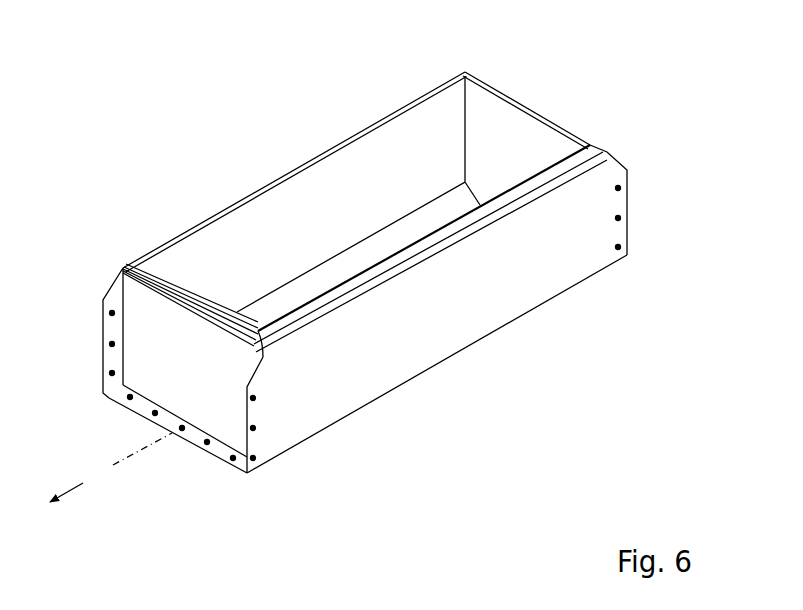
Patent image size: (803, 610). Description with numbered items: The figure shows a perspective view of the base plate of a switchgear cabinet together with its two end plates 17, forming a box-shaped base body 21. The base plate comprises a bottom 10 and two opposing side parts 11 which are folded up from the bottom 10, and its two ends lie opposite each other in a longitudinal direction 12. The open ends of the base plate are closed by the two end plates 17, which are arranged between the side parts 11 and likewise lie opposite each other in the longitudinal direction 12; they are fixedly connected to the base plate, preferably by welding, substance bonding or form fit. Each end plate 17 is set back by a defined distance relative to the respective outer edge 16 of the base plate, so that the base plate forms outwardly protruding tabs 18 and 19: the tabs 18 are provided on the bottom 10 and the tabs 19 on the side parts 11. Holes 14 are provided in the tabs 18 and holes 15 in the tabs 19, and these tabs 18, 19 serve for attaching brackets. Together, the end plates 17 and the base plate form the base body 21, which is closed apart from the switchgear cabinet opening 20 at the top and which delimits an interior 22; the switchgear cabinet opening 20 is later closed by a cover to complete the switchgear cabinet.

The bottom 10 is at (448, 205).
The side parts 11 is at (318, 152).
The longitudinal direction 12 is at (73, 492).
The holes 14 is at (225, 462).
The holes 15 is at (632, 187).
The outer edges 16 is at (133, 410).
The end plates 17 is at (530, 110).
The tabs 18 is at (198, 432).
The tabs 19 is at (622, 197).
The switchgear cabinet opening 20 is at (550, 142).
The base body 21 is at (238, 128).
The interior 22 is at (253, 240).